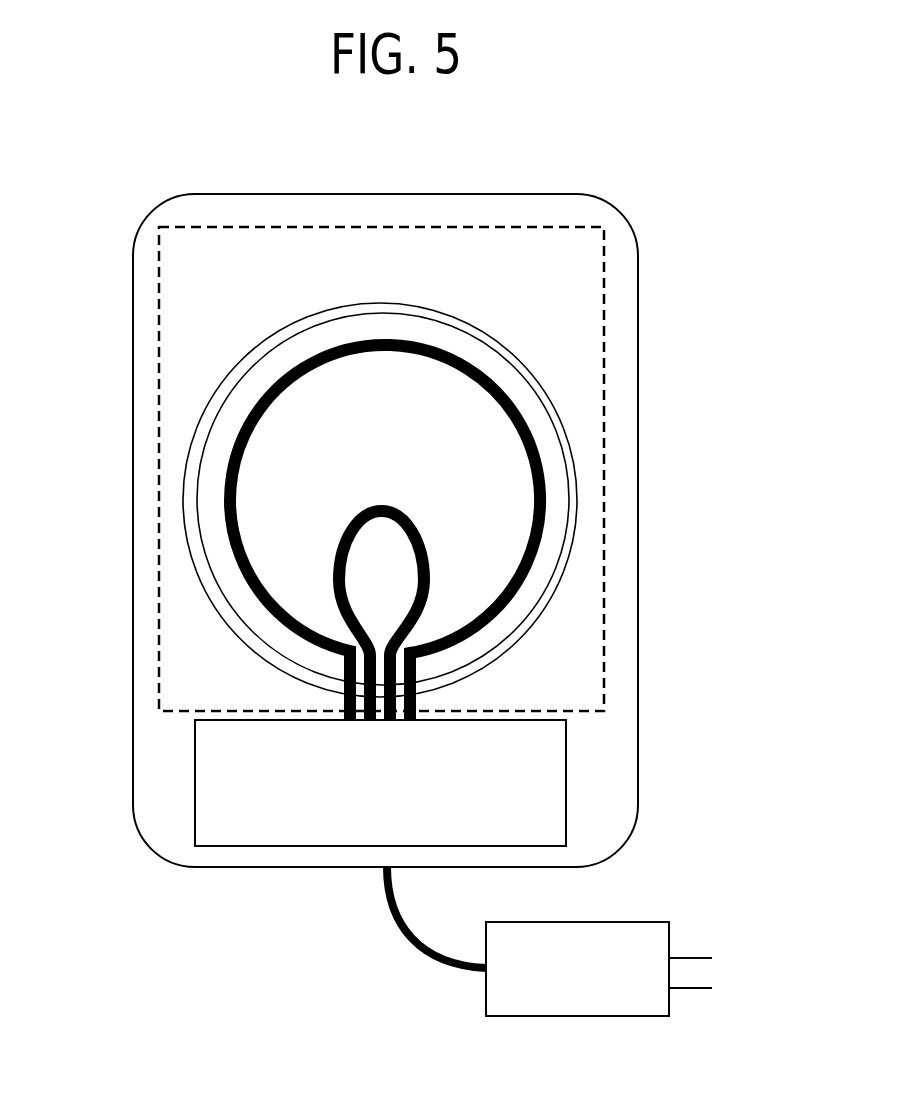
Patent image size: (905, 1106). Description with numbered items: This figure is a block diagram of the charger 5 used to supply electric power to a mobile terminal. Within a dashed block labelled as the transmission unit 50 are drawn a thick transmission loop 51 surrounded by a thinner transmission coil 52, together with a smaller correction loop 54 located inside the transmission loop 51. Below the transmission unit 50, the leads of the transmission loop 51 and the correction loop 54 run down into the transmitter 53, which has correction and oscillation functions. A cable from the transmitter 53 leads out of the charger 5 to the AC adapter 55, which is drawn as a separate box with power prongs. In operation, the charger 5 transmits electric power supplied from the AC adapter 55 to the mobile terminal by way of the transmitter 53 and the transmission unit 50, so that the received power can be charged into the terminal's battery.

The charger 5 is at (638, 338).
The transmission unit 50 is at (158, 455).
The transmission loop 51 is at (548, 523).
The transmission coil 52 is at (565, 453).
The transmitter 53 is at (566, 781).
The correction loop 54 is at (333, 597).
The AC adapter 55 is at (486, 1007).